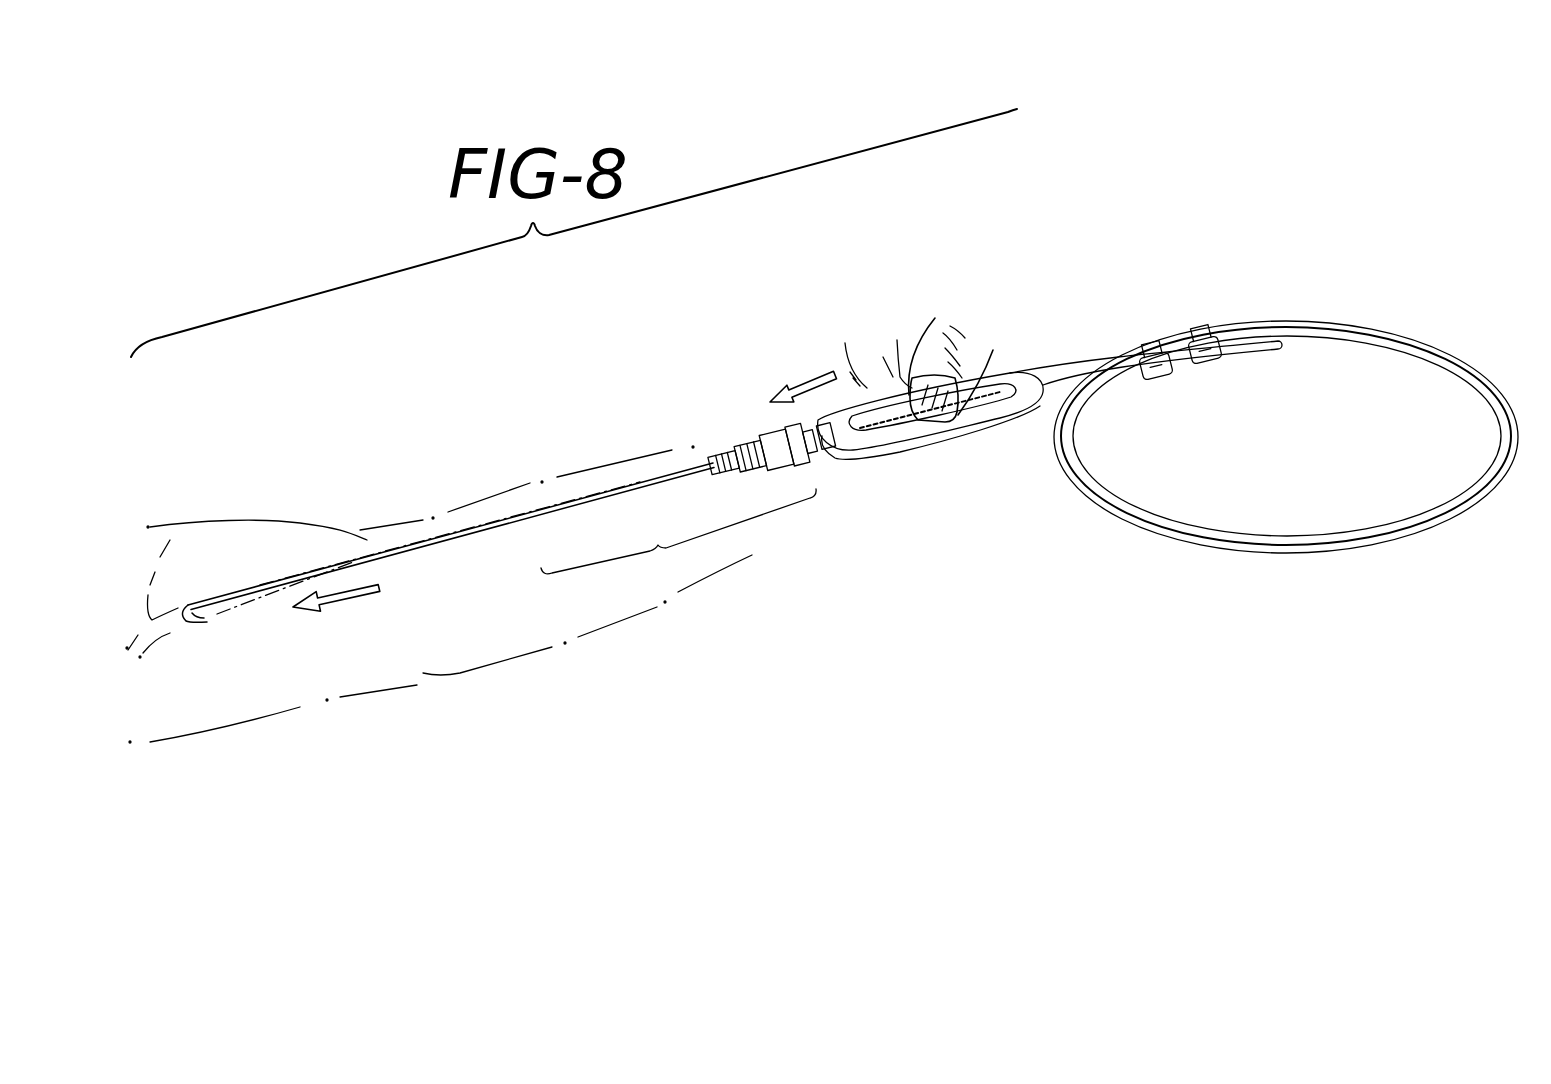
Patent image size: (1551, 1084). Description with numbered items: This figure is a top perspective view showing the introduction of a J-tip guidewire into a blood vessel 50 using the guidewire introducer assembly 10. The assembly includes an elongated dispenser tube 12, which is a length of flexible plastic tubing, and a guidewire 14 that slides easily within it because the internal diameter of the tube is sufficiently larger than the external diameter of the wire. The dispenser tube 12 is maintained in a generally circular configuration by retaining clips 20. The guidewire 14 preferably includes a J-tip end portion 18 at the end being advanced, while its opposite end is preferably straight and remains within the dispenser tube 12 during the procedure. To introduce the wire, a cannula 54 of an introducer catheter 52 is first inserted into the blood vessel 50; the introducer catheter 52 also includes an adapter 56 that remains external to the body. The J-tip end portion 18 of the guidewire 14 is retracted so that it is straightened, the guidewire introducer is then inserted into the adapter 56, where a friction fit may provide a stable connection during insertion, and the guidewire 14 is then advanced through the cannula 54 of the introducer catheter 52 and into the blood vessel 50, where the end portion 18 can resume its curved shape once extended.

The guidewire introducer assembly 10 is at (1018, 630).
The dispenser tube 12 is at (1388, 545).
The guidewire 14 is at (890, 420).
The J-tip end portion 18 is at (181, 625).
The retaining clips 20 is at (1217, 362).
The blood vessel 50 is at (170, 527).
The introducer catheter 52 is at (678, 538).
The cannula 54 is at (642, 488).
The adapter 56 is at (770, 438).